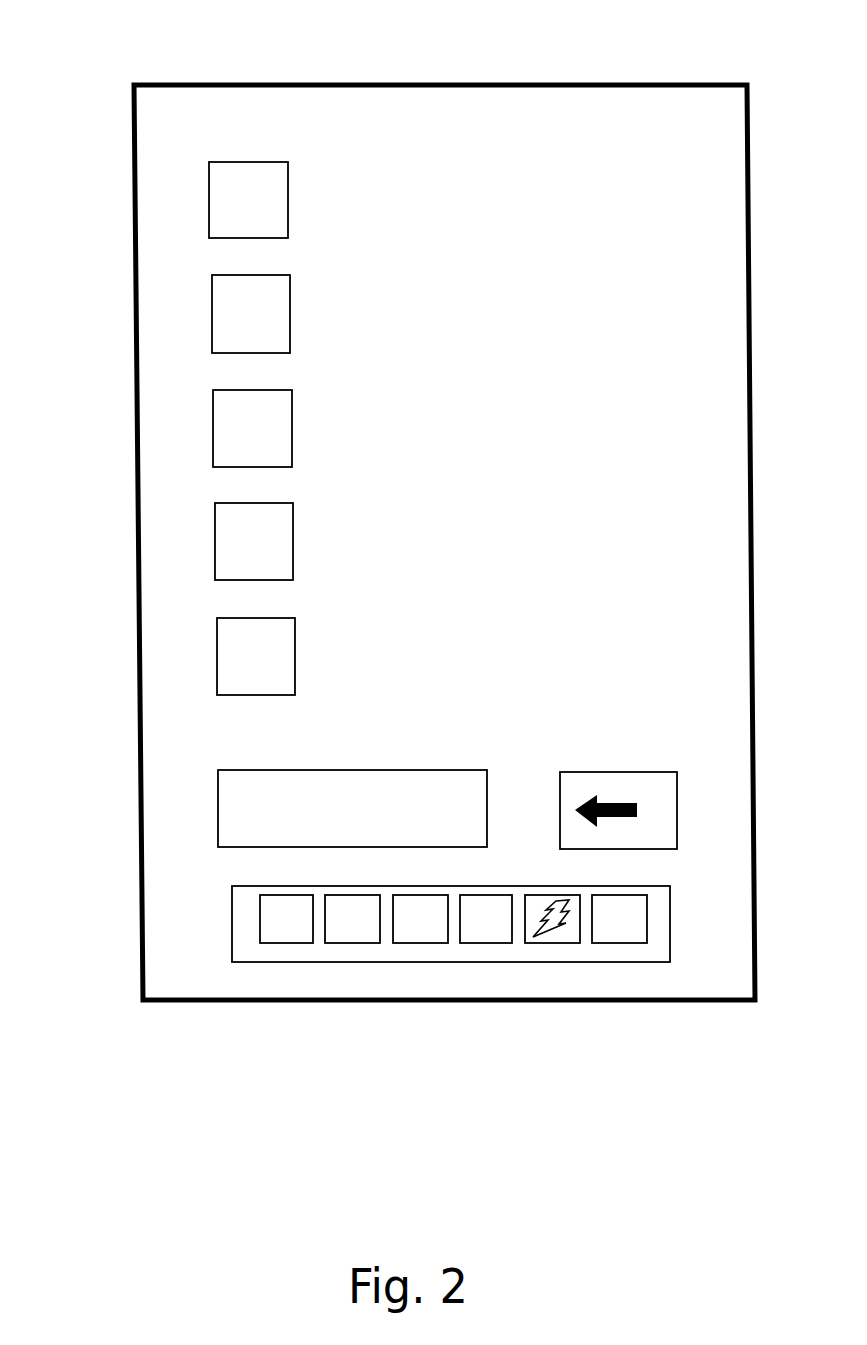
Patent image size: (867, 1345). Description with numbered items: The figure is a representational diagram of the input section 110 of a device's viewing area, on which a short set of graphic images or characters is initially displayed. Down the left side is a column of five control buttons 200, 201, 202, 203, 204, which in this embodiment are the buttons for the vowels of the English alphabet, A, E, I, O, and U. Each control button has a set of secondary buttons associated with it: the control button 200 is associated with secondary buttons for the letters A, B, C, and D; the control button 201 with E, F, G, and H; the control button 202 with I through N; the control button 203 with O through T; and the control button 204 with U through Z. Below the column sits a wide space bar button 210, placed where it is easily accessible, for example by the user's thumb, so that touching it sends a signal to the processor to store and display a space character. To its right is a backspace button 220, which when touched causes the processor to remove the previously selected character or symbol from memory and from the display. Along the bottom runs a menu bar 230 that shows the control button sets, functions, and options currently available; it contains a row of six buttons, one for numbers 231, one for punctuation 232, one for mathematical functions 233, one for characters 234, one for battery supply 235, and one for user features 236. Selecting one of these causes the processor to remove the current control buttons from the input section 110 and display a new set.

The input section 110 is at (541, 50).
The control button 200 is at (203, 193).
The control button 201 is at (210, 305).
The control button 202 is at (210, 423).
The control button 203 is at (213, 535).
The control button 204 is at (215, 645).
The space bar button 210 is at (330, 742).
The backspace button 220 is at (588, 740).
The menu bar 230 is at (218, 912).
The numbers button 231 is at (272, 952).
The punctuation button 232 is at (355, 952).
The mathematical functions button 233 is at (421, 952).
The characters button 234 is at (480, 952).
The battery supply button 235 is at (545, 952).
The user features button 236 is at (622, 952).